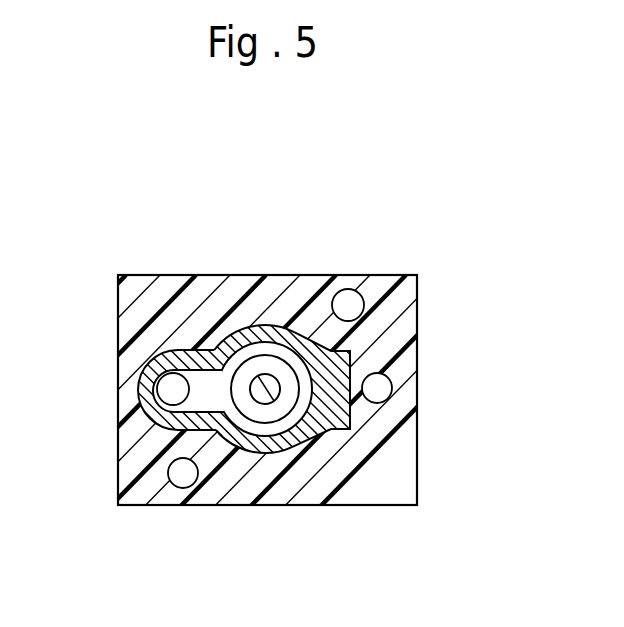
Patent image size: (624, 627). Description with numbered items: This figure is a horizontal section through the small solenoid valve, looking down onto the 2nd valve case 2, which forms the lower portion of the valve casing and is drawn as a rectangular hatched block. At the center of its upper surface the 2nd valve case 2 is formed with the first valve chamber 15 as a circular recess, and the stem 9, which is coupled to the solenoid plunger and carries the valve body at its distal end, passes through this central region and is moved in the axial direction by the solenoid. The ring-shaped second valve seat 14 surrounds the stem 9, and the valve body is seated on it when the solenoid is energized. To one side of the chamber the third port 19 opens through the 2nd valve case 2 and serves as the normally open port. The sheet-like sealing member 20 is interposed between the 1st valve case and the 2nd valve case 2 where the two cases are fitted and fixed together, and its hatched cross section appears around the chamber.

The 2nd valve case 2 is at (243, 277).
The stem 9 is at (264, 392).
The second valve seat 14 is at (287, 405).
The first valve chamber 15 is at (213, 390).
The third port 19 is at (375, 390).
The sealing member 20 is at (165, 428).